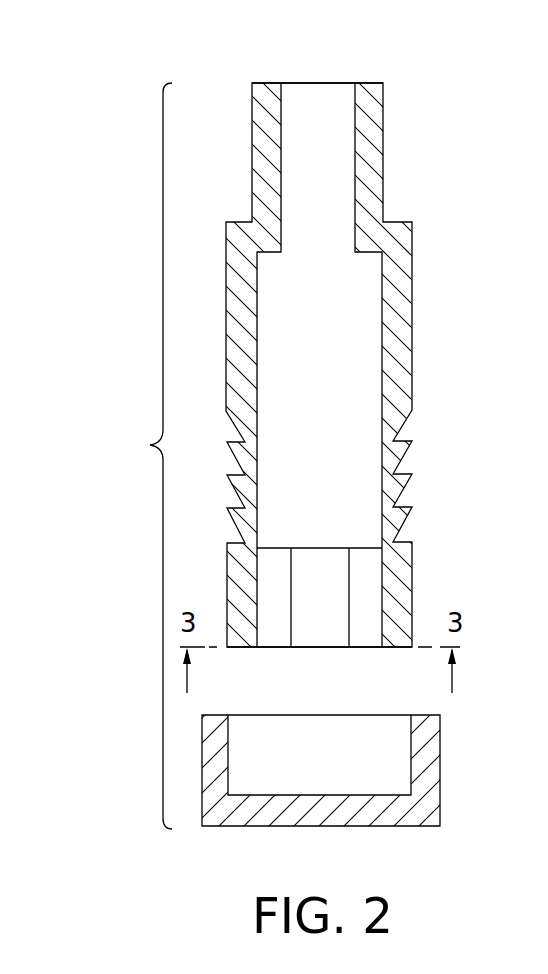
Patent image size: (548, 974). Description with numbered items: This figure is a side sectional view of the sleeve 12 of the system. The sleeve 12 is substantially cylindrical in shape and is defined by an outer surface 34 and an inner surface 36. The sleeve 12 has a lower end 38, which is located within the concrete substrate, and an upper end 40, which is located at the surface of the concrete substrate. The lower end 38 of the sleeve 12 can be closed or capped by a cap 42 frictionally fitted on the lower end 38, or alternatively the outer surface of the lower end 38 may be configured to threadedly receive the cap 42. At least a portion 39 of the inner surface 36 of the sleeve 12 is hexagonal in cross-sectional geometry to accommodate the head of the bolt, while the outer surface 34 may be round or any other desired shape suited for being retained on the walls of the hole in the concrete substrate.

The sleeve 12 is at (150, 445).
The outer surface 34 is at (412, 264).
The inner surface 36 is at (385, 330).
The lower end 38 is at (273, 647).
The portion 39 is at (322, 564).
The upper end 40 is at (328, 83).
The cap 42 is at (400, 826).